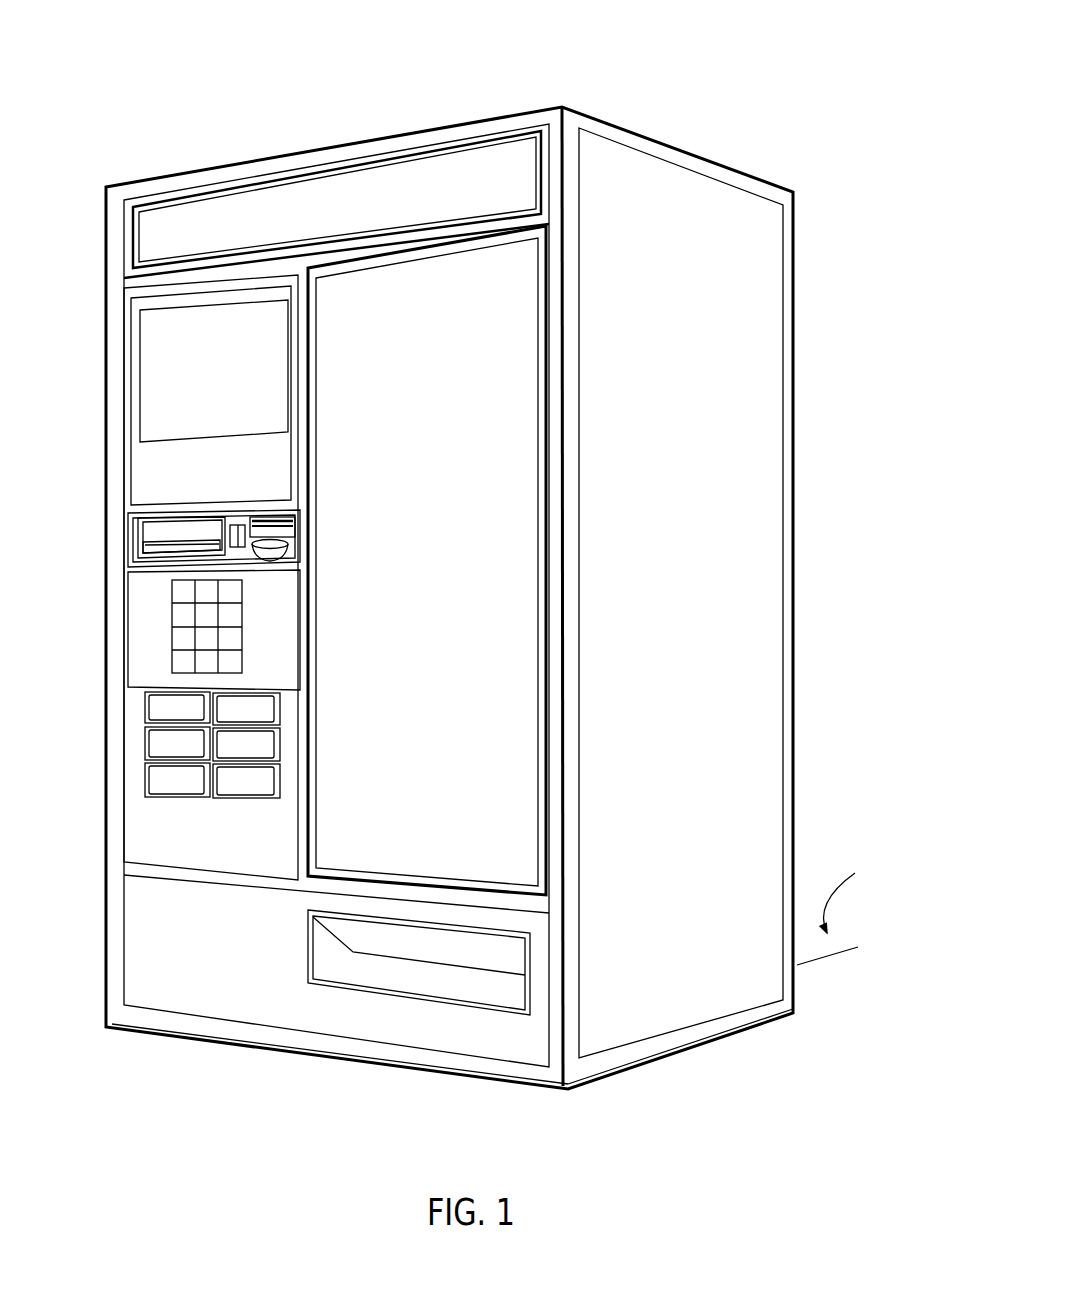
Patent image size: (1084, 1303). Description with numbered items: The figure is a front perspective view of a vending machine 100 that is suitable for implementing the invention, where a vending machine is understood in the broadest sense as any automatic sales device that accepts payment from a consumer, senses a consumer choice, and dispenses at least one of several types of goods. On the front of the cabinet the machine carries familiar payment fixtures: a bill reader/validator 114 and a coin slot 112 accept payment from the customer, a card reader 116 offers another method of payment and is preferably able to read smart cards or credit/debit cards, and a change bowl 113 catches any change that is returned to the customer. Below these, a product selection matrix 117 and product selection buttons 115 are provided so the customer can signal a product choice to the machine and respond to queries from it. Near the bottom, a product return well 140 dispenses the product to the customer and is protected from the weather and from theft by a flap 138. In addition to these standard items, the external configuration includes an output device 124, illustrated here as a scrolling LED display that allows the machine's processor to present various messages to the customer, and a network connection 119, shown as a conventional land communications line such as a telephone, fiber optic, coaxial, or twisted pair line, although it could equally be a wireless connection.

The vending machine 100 is at (472, 62).
The coin slot 112 is at (238, 522).
The change bowl 113 is at (278, 551).
The bill reader/validator 114 is at (153, 525).
The product selection buttons 115 is at (172, 813).
The card reader 116 is at (256, 515).
The product selection matrix 117 is at (157, 633).
The network connection 119 is at (827, 968).
The output device 124 is at (153, 387).
The flap 138 is at (377, 938).
The product return well 140 is at (432, 978).